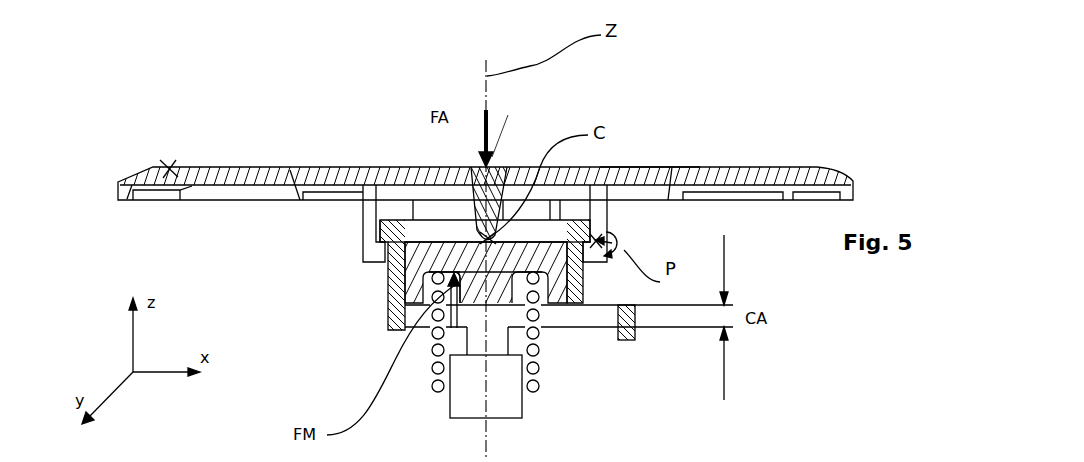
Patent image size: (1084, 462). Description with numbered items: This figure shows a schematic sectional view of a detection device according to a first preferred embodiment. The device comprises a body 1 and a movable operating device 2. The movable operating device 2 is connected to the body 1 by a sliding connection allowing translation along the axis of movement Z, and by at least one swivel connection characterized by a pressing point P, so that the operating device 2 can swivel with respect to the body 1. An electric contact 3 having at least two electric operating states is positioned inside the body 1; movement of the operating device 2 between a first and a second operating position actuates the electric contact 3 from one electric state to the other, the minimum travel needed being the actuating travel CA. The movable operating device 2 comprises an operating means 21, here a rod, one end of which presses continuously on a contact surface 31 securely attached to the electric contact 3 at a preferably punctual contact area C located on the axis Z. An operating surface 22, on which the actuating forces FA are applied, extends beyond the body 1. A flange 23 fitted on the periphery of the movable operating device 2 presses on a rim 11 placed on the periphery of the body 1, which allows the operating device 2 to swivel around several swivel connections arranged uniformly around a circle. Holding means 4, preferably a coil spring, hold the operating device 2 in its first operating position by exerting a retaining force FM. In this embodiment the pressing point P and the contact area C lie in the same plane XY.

The body 1 is at (510, 333).
The movable operating device 2 is at (794, 146).
The electric contact 3 is at (522, 403).
The holding means 4 is at (443, 274).
The rim 11 is at (380, 233).
The operating means 21 is at (395, 268).
The operating surface 22 is at (640, 168).
The flange 23 is at (378, 248).
The contact surface 31 is at (447, 243).